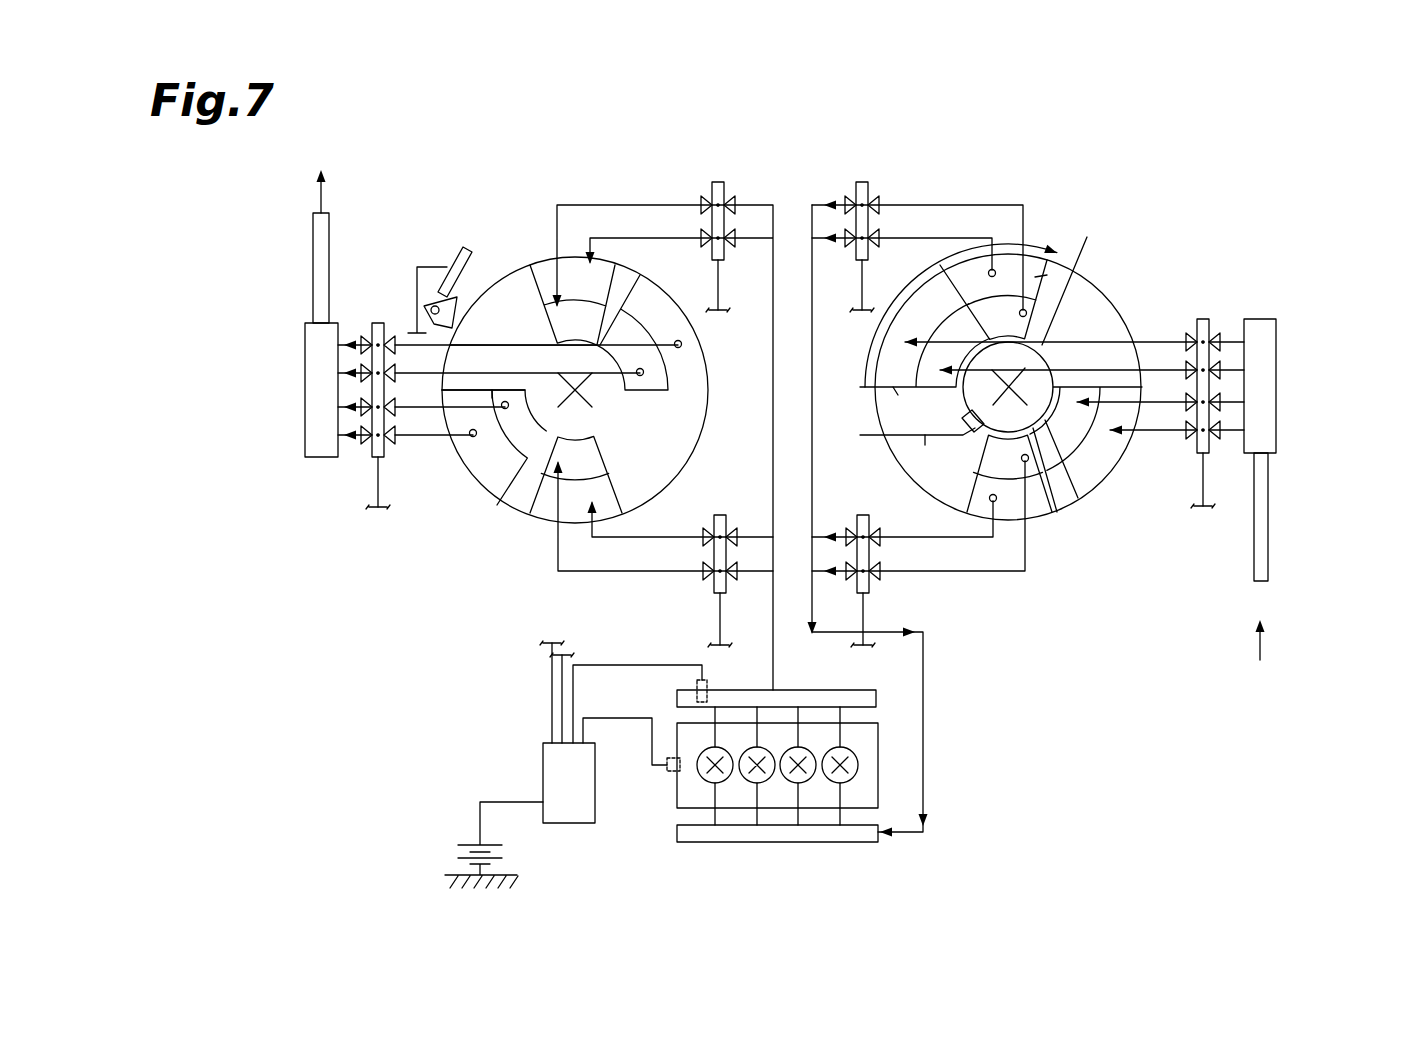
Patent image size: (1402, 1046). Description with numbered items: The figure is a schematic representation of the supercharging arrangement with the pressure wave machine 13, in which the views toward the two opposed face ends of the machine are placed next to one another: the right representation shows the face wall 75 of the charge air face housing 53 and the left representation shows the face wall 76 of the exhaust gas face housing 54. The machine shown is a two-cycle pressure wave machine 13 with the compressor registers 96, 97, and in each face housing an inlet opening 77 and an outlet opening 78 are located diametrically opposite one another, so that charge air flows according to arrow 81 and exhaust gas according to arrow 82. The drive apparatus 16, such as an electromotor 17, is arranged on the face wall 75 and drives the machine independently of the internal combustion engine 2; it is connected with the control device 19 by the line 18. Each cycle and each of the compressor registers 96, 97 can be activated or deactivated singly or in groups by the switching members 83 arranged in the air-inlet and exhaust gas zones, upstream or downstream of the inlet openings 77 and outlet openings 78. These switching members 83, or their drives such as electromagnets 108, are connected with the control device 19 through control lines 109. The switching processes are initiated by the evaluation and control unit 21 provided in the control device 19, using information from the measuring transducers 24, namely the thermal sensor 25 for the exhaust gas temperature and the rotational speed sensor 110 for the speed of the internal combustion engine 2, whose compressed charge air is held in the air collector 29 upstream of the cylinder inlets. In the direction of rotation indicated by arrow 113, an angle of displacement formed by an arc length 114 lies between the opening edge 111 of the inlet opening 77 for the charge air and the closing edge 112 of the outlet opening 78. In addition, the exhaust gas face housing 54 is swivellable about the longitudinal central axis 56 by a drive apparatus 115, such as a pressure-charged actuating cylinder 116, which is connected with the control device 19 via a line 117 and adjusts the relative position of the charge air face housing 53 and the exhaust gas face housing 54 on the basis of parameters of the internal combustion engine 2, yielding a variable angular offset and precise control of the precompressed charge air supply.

The internal combustion engine 2 is at (860, 770).
The pressure wave machine 13 is at (521, 200).
The drive apparatus 16 is at (1036, 370).
The electromotor 17 is at (1047, 415).
The line 18 is at (925, 440).
The control device 19 is at (556, 772).
The evaluation and control unit 21 is at (577, 835).
The measuring transducers 24 is at (665, 785).
The thermal sensor 25 is at (708, 686).
The air collector 29 is at (780, 832).
The charge air face housing 53 is at (1162, 224).
The exhaust gas face housing 54 is at (506, 217).
The longitudinal central axis 56 is at (592, 400).
The face wall 75 is at (1093, 320).
The face wall 76 is at (510, 300).
The inlet opening 77 is at (929, 292).
The outlet opening 78 is at (992, 262).
The arrow (charge air stream) 81 is at (1145, 335).
The arrow (exhaust gas stream) 82 is at (578, 200).
The switching members 83 is at (395, 458).
The compressor register 96 is at (483, 467).
The compressor register 97 is at (525, 455).
The electromagnets 108 is at (718, 180).
The control lines 109 is at (718, 290).
The rotational speed sensor 110 is at (668, 758).
The opening edge 111 is at (897, 390).
The closing edge 112 is at (538, 250).
The arrow (direction of rotation) 113 is at (1071, 285).
The arc length 114 is at (866, 370).
The drive apparatus 115 is at (405, 273).
The actuating cylinder 116 is at (452, 258).
The line 117 is at (412, 322).